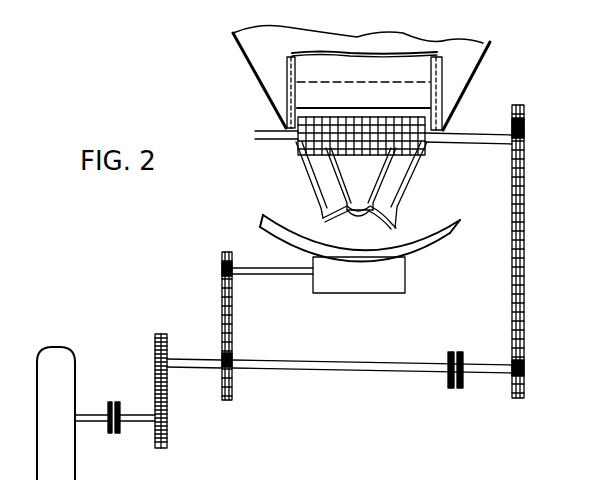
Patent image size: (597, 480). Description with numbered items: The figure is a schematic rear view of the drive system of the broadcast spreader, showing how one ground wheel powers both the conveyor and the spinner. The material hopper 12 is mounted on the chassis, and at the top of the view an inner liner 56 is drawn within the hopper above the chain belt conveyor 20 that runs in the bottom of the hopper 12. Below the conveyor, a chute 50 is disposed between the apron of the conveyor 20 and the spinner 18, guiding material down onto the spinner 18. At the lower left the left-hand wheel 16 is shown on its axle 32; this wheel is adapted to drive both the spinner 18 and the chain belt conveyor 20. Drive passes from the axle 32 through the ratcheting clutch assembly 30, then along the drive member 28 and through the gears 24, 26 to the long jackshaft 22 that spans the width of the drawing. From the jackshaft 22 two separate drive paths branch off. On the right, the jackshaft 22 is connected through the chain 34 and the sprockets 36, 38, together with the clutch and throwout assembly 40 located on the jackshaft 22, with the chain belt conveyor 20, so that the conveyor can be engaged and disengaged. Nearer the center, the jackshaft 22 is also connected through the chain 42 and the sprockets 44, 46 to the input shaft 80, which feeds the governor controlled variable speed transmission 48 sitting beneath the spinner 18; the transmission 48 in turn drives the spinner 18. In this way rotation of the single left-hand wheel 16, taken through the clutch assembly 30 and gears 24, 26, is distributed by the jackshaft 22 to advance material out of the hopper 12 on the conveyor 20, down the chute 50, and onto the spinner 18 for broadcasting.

The material hopper 12 is at (477, 50).
The hopper liner 56 is at (410, 65).
The chain belt conveyor 20 is at (349, 128).
The chute 50 is at (295, 186).
The spinner 18 is at (436, 250).
The governor controlled variable speed transmission 48 is at (361, 293).
The input shaft 80 is at (249, 267).
The chain 42 is at (233, 318).
The sprocket 46 is at (228, 271).
The sprocket 44 is at (233, 356).
The gear 24 is at (168, 423).
The gear 26 is at (155, 370).
The jackshaft 22 is at (341, 373).
The clutch and throwout assembly 40 is at (452, 393).
The chain 34 is at (525, 285).
The sprocket 38 is at (525, 133).
The sprocket 36 is at (525, 368).
The left-hand wheel 16 is at (47, 352).
The axle 32 is at (88, 414).
The ratcheting clutch assembly 30 is at (116, 433).
The drive member 28 is at (140, 423).